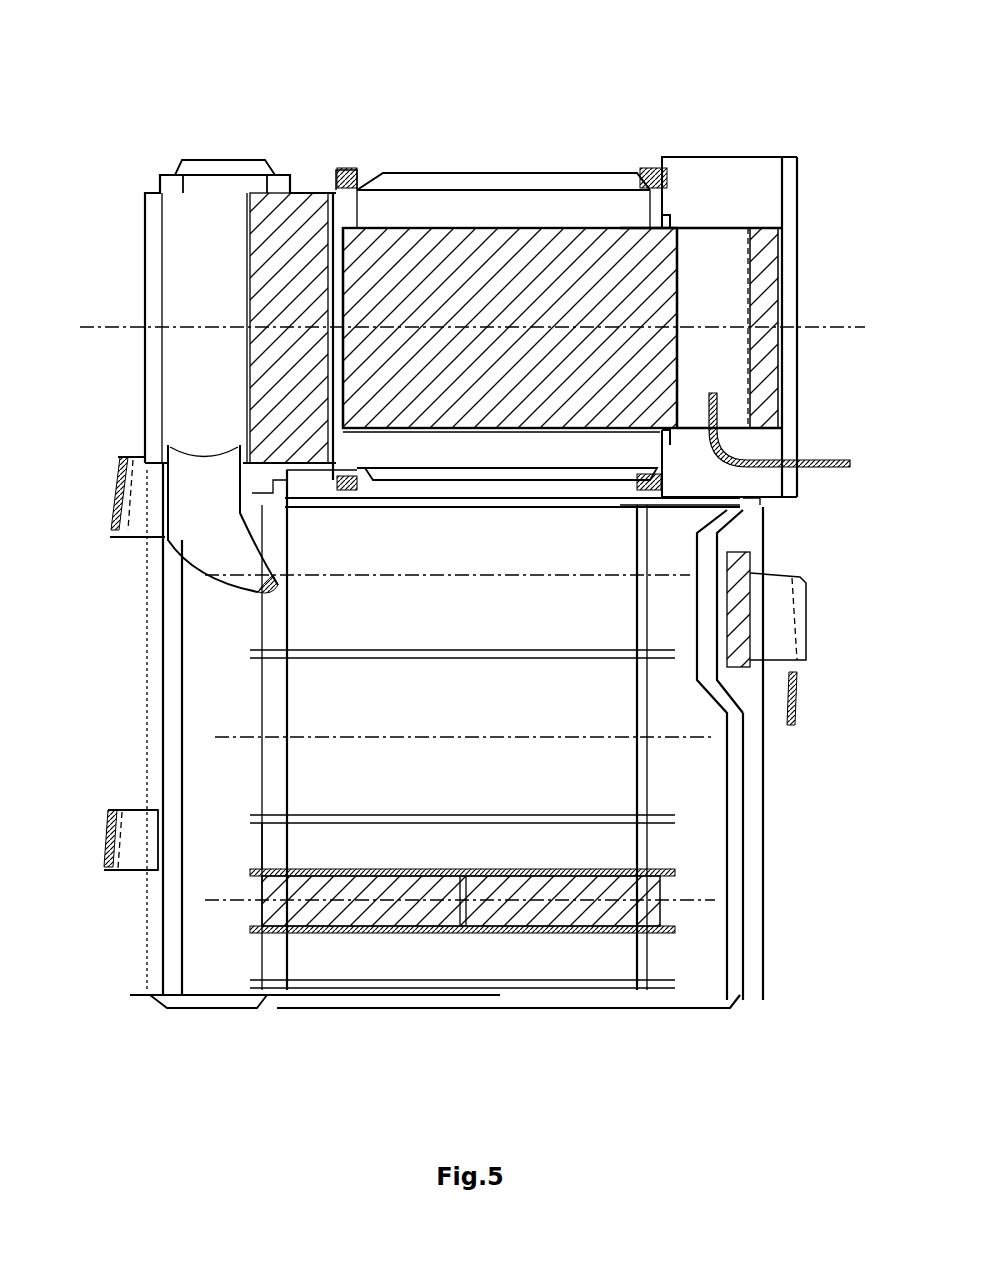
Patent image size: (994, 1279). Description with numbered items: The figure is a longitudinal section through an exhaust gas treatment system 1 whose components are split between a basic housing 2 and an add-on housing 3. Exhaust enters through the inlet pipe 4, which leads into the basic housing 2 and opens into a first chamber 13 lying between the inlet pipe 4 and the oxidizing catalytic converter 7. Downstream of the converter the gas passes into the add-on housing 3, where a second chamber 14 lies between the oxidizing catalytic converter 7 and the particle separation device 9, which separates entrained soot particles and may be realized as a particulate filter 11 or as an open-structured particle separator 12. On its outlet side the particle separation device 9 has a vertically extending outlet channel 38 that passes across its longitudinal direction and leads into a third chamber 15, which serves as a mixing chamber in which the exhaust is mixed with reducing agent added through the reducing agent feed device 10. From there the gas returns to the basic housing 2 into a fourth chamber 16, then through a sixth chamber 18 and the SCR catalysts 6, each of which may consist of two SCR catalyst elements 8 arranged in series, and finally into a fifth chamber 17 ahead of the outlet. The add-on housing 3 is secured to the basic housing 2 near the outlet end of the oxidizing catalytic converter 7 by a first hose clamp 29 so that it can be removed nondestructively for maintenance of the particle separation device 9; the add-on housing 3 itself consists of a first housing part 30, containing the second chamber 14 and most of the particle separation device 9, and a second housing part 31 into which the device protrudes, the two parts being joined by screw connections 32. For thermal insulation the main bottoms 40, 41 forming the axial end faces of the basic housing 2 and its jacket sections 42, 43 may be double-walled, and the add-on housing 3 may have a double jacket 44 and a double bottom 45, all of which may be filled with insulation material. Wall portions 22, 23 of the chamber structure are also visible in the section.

The exhaust gas treatment system 1 is at (108, 153).
The basic housing 2 is at (495, 1012).
The add-on housing 3 is at (610, 170).
The inlet pipe 4 is at (225, 545).
The SCR catalyst 6 is at (457, 619).
The oxidizing catalytic converter 7 is at (315, 205).
The SCR catalyst element 8 is at (345, 900).
The particle separation device 9 is at (510, 286).
The reducing agent feed device 10 is at (720, 430).
The particulate filter 11 is at (510, 328).
The particle separator 12 is at (432, 265).
The first chamber 13 is at (213, 306).
The second chamber 14 is at (590, 200).
The third chamber 15 is at (737, 200).
The fourth chamber 16 is at (716, 809).
The fifth chamber 17 is at (236, 844).
The sixth chamber 18 is at (330, 820).
The wall 22 is at (640, 700).
The wall section 23 is at (290, 842).
The first hose clamp 29 is at (345, 168).
The first housing part 30 is at (550, 175).
The second housing part 31 is at (717, 175).
The screw connection 32 is at (655, 170).
The outlet channel 38 is at (725, 305).
The main bottom 40 is at (182, 692).
The main bottom 41 is at (743, 925).
The jacket section 42 is at (400, 1010).
The jacket section 43 is at (252, 160).
The double jacket 44 is at (530, 175).
The double bottom 45 is at (800, 210).